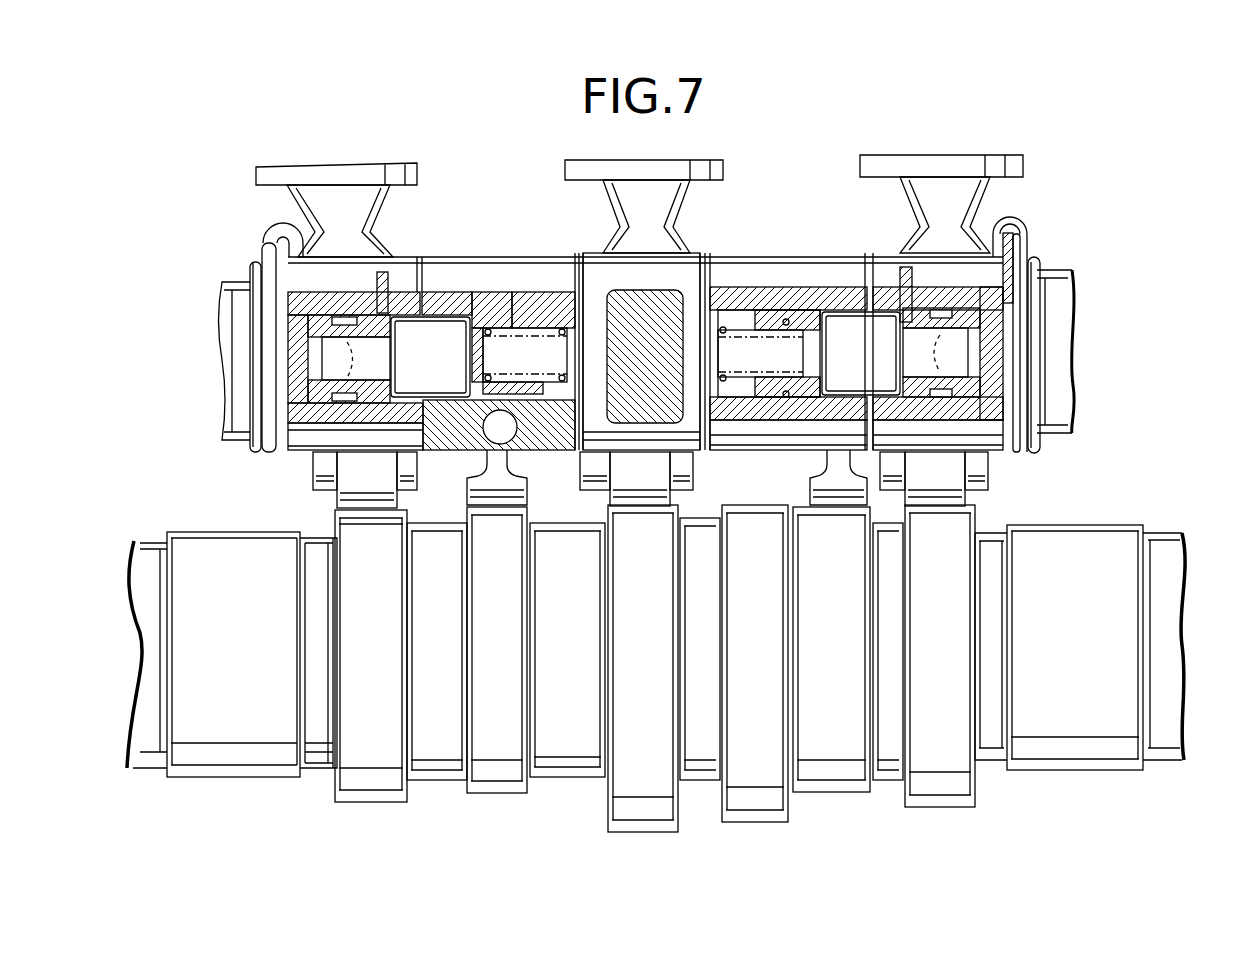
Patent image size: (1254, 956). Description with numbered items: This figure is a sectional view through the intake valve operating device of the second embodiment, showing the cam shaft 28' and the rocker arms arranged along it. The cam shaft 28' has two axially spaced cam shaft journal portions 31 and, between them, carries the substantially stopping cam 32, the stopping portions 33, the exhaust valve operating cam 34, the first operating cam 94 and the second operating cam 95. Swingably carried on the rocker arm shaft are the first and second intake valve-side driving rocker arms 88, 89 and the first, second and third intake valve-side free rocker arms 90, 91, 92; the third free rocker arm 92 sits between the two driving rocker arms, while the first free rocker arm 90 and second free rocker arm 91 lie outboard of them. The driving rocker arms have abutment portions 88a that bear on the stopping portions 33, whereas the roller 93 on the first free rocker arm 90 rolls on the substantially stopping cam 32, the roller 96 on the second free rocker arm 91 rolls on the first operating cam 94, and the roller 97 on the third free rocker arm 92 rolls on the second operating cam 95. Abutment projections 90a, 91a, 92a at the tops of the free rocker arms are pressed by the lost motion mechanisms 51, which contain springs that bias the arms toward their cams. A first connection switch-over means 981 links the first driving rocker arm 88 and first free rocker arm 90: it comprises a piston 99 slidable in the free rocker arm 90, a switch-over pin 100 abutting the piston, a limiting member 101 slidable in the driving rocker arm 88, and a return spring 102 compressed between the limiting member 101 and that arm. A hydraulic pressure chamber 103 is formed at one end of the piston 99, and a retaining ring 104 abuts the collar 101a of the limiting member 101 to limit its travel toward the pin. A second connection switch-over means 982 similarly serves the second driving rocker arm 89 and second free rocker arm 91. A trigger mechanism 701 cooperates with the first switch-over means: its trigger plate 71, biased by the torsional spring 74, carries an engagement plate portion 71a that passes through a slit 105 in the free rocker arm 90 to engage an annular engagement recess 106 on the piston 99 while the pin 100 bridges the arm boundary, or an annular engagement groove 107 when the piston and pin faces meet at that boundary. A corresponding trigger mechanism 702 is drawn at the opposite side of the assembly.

The cam shaft 28' is at (1132, 515).
The cam shaft journal portion 31 is at (207, 552).
The substantially stopping cam 32 is at (324, 683).
The stopping portion 33 is at (497, 780).
The exhaust valve operating cam 34 is at (750, 807).
The lost motion mechanism 51 is at (420, 155).
The trigger mechanism 701 is at (227, 330).
The holding device 702 is at (1052, 450).
The trigger plate 71 is at (283, 243).
The engagement plate portion 71a is at (393, 273).
The torsional spring 74 is at (255, 317).
The first intake valve-side driving rocker arm 88 is at (512, 356).
The abutment portion 88a is at (493, 488).
The second intake valve-side driving rocker arm 89 is at (807, 328).
The first intake valve-side free rocker arm 90 is at (311, 380).
The abutment projection 90a is at (337, 235).
The second intake valve-side free rocker arm 91 is at (990, 397).
The abutment projection 91a is at (940, 230).
The third intake valve-side free rocker arm 92 is at (690, 273).
The abutment projection 92a is at (647, 240).
The roller 93 is at (357, 512).
The first operating cam 94 is at (942, 790).
The second operating cam 95 is at (627, 802).
The roller 96 is at (930, 490).
The roller 97 is at (645, 495).
The first connection switch-over means 981 is at (517, 283).
The second connection switch-over means 982 is at (841, 295).
The piston 99 is at (307, 335).
The switch-over pin 100 is at (440, 307).
The limiting member 101 is at (453, 453).
The collar 101a is at (545, 300).
The return spring 102 is at (540, 445).
The hydraulic pressure chamber 103 is at (307, 310).
The retaining ring 104 is at (520, 405).
The slit 105 is at (462, 363).
The annular engagement recess 106 is at (380, 487).
The annular engagement groove 107 is at (327, 440).